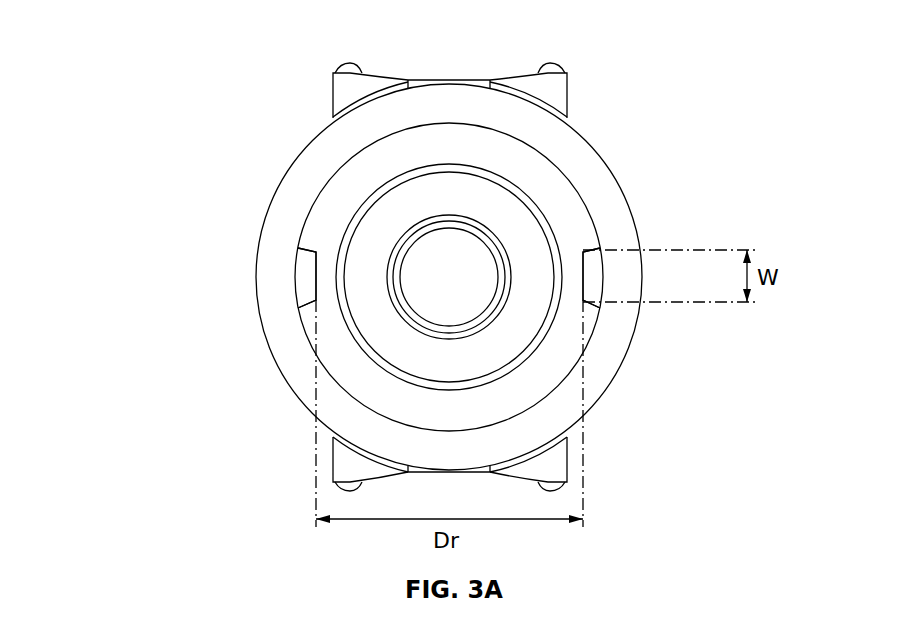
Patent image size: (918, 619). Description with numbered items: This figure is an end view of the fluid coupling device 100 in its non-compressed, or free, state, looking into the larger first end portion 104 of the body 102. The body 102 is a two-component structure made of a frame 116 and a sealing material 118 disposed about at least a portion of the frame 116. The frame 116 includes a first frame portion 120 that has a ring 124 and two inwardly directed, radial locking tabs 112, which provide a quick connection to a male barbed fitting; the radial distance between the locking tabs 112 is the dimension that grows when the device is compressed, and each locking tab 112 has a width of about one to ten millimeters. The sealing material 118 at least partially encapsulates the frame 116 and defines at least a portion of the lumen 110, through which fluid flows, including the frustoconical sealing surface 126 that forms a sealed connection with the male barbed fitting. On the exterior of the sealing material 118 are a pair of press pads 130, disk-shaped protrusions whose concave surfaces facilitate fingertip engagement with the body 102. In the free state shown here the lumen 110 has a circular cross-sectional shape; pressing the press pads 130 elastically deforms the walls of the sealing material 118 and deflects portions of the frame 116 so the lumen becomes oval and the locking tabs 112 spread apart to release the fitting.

The fluid coupling device 100 is at (179, 50).
The body 102 is at (648, 236).
The first end portion 104 is at (570, 128).
The lumen 110 is at (468, 273).
The locking tab 112 is at (303, 277).
The frame 116 is at (287, 360).
The sealing material 118 is at (550, 184).
The first frame portion 120 is at (449, 278).
The ring 124 is at (590, 394).
The frustoconical sealing surface 126 is at (527, 240).
The press pad 130 is at (357, 87).